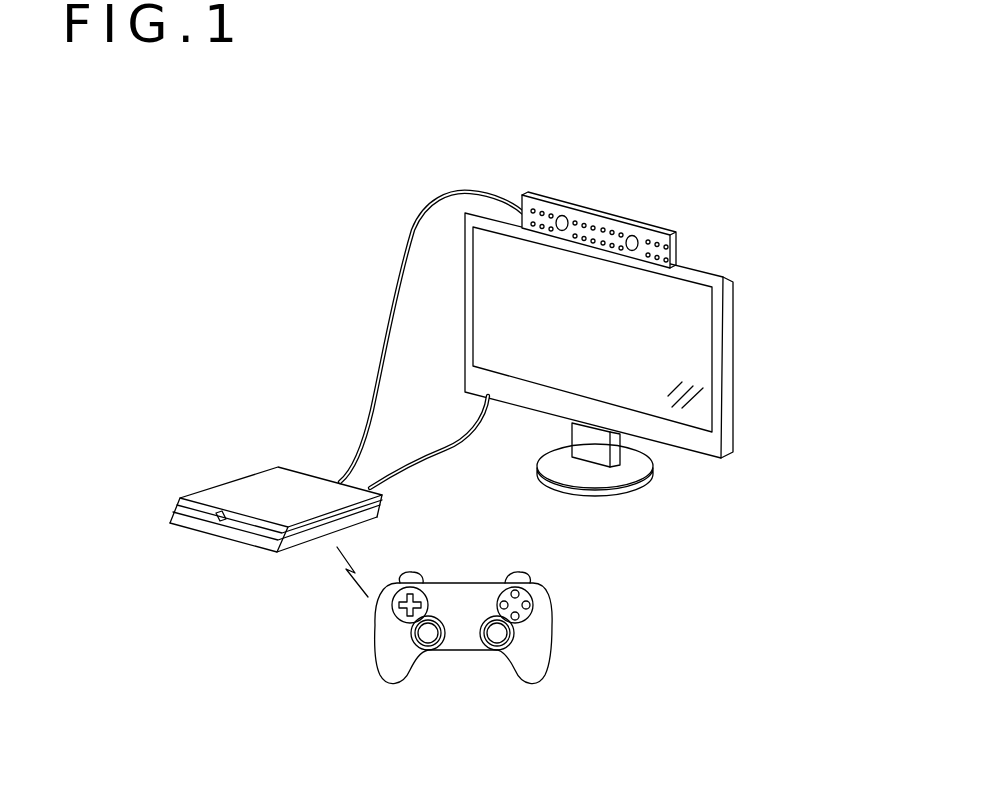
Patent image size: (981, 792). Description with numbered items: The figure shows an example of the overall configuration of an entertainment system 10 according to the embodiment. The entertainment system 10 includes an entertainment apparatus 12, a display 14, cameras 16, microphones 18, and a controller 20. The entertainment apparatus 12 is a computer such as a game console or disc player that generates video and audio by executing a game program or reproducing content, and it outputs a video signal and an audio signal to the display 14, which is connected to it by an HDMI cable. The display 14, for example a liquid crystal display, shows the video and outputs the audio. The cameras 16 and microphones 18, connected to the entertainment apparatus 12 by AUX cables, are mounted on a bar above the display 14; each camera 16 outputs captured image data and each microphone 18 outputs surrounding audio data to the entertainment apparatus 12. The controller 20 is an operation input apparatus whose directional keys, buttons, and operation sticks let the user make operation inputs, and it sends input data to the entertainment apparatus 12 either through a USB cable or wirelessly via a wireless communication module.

The entertainment system 10 is at (332, 188).
The entertainment apparatus 12 is at (232, 482).
The display 14 is at (733, 363).
The camera 16 is at (560, 230).
The microphone 18 is at (599, 225).
The controller 20 is at (552, 635).